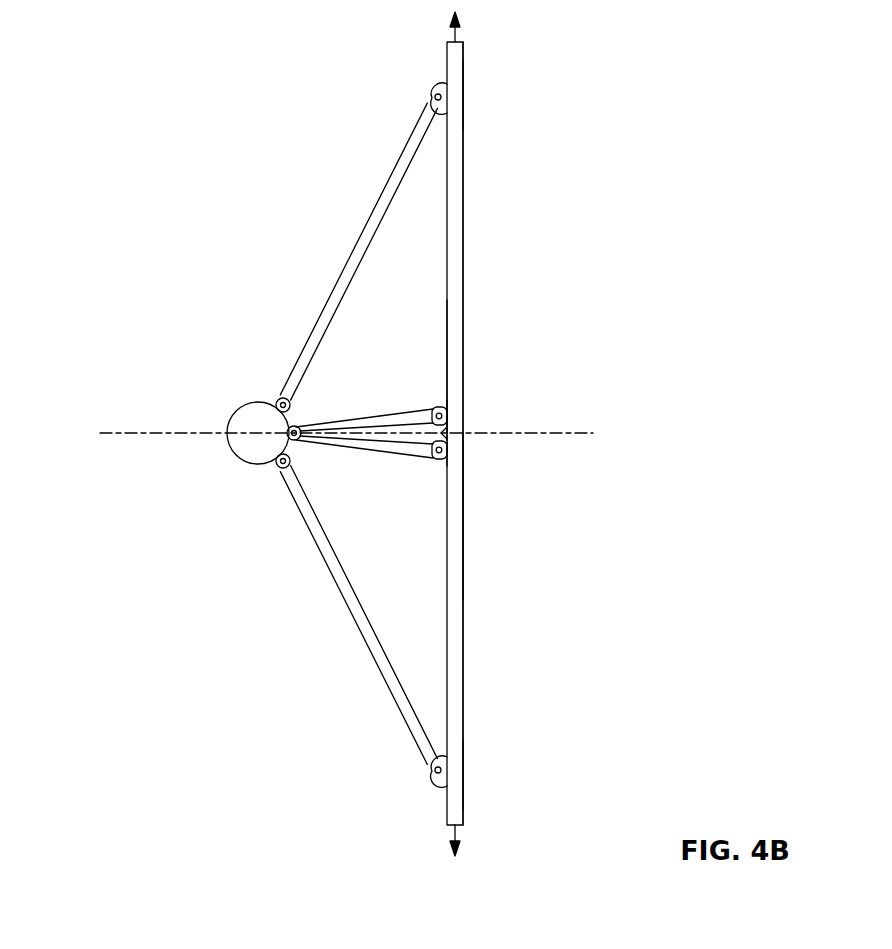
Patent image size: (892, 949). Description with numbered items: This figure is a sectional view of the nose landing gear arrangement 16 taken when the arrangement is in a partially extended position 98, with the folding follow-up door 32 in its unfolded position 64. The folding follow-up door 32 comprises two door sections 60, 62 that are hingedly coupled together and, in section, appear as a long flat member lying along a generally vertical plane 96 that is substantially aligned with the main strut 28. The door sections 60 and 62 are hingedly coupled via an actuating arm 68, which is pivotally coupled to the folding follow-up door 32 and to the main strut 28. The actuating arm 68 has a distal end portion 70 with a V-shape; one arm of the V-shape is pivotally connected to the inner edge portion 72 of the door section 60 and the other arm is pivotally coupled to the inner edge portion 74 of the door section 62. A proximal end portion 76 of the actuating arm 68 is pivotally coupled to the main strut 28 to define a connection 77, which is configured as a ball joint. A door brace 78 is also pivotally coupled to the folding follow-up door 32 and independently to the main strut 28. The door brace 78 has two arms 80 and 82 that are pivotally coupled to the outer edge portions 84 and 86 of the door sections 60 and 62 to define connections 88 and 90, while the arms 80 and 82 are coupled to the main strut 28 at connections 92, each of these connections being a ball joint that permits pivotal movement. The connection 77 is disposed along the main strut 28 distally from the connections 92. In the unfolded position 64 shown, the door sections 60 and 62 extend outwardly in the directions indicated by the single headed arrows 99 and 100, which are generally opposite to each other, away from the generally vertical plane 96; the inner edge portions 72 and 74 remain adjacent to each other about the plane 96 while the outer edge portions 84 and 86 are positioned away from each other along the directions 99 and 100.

The nose landing gear arrangement 16 is at (108, 72).
The main strut 28 is at (232, 442).
The folding follow-up door 32 is at (465, 444).
The door section 60 is at (465, 648).
The door section 62 is at (465, 315).
The unfolded position 64 is at (465, 160).
The actuating arm 68 is at (377, 440).
The distal end portion 70 is at (415, 425).
The inner edge portion 72 is at (465, 488).
The inner edge portion 74 is at (455, 362).
The proximal end portion 76 is at (351, 420).
The connection 77 is at (300, 446).
The door brace 78 is at (358, 433).
The arm 80 is at (373, 657).
The arm 82 is at (355, 252).
The outer edge portion 84 is at (465, 790).
The outer edge portion 86 is at (465, 93).
The connection 88 is at (440, 786).
The connection 90 is at (443, 82).
The connections 92 is at (277, 400).
The generally vertical plane 96 is at (128, 433).
The partially extended position 98 is at (568, 146).
The direction arrow 99 is at (460, 834).
The direction arrow 100 is at (456, 31).